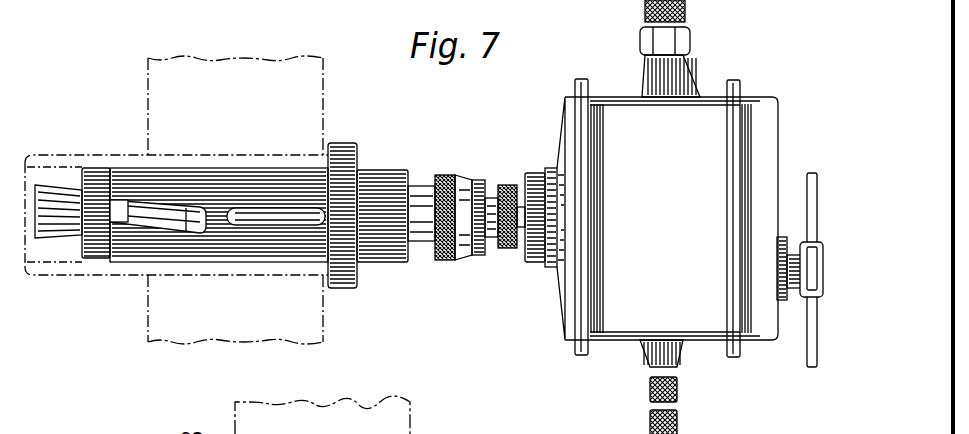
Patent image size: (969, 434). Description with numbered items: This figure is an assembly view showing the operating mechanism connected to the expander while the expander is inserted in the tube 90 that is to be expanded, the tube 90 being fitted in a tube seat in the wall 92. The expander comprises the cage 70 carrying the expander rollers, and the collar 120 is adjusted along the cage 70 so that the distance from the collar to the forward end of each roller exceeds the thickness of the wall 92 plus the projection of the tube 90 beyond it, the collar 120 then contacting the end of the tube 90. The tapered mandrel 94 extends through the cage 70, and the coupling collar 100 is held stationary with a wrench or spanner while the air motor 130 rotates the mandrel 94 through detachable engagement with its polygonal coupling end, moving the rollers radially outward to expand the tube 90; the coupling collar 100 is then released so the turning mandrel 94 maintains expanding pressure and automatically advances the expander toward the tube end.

The cage 70 is at (240, 205).
The tube 90 is at (40, 153).
The wall 92 is at (148, 82).
The mandrel 94 is at (34, 212).
The coupling collar 100 is at (418, 187).
The collar 120 is at (347, 143).
The air motor 130 is at (758, 97).